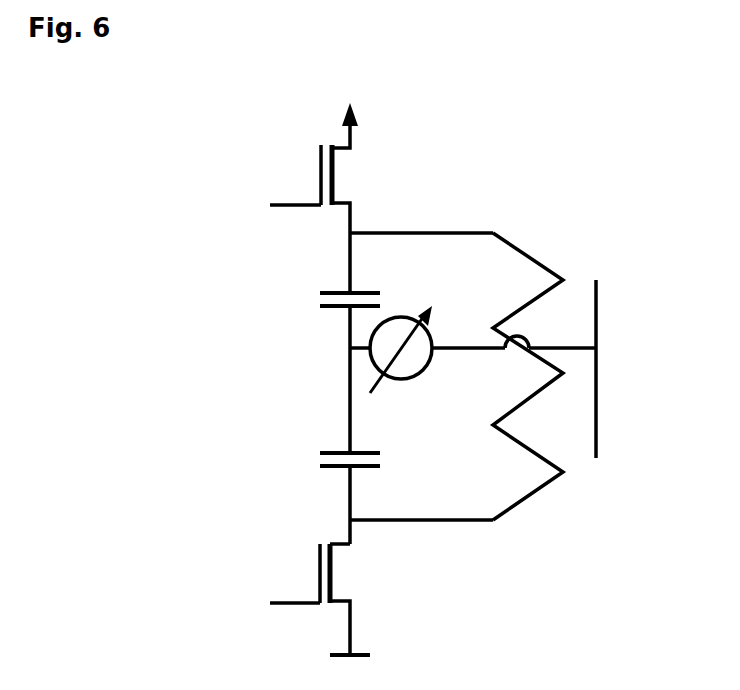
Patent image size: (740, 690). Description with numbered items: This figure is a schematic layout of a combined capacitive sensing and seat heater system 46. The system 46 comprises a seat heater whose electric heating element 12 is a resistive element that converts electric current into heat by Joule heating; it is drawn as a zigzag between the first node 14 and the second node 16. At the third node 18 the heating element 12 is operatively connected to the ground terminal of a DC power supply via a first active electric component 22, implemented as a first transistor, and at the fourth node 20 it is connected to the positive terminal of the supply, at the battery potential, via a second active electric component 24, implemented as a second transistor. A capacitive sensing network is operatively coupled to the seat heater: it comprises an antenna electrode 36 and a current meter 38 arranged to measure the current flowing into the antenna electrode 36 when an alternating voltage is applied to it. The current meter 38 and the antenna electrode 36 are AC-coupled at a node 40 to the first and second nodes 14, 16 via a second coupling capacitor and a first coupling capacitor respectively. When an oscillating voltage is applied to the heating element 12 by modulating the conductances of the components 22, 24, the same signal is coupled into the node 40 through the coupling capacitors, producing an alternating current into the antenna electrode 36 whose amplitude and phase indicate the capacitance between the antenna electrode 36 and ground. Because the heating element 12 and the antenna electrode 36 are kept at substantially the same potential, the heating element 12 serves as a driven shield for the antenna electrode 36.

The electric heating element 12 is at (522, 500).
The first node 14 is at (416, 520).
The second node 16 is at (436, 234).
The third node 18 is at (347, 625).
The fourth node 20 is at (348, 131).
The first active electric component 22 is at (347, 585).
The second active electric component 24 is at (352, 170).
The antenna electrode 36 is at (598, 450).
The current meter 38 is at (430, 365).
The node 40 is at (340, 366).
The combined capacitive sensing and seat heater system 46 is at (606, 176).